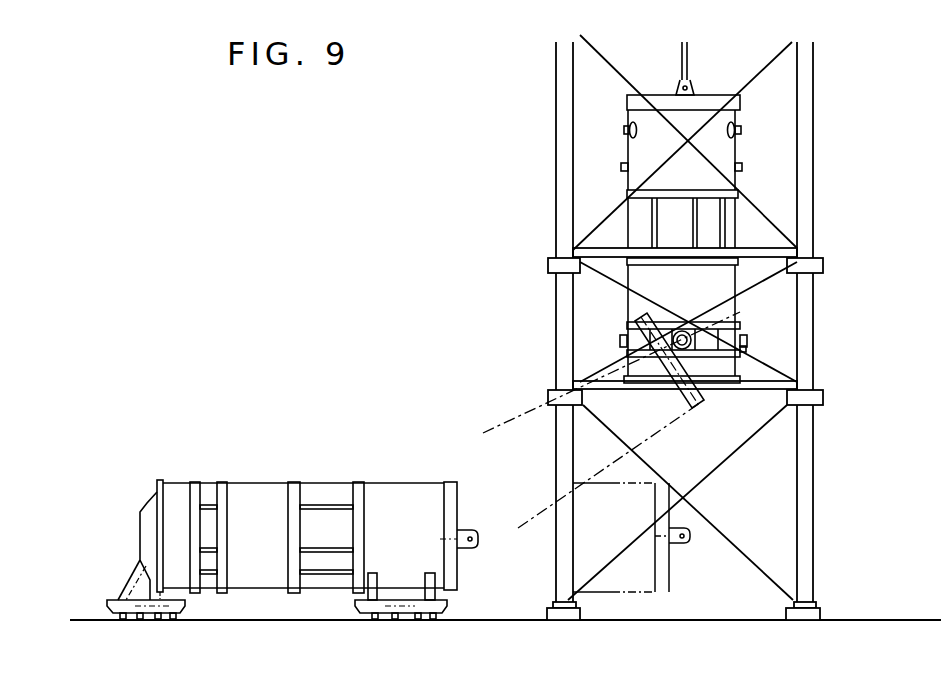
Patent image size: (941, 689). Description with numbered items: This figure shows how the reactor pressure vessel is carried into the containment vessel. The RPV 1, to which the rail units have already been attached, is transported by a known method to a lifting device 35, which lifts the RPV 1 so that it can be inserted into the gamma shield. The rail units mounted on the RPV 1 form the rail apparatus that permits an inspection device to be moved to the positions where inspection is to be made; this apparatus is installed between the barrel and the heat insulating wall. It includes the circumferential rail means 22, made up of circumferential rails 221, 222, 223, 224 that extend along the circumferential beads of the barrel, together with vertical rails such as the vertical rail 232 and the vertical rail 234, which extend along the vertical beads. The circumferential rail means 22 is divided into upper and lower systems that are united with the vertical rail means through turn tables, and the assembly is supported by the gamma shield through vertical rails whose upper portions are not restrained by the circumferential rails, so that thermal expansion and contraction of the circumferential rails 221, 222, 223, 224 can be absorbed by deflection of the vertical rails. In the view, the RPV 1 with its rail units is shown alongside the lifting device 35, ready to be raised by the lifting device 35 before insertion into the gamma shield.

The RPV 1 is at (736, 152).
The circumferential rail means 22 is at (604, 217).
The circumferential rail 221 is at (627, 191).
The circumferential rail 222 is at (722, 265).
The circumferential rail 223 is at (738, 325).
The circumferential rail 224 is at (738, 350).
The vertical rail 232 is at (652, 227).
The vertical rail 234 is at (641, 318).
The lifting device 35 is at (808, 197).